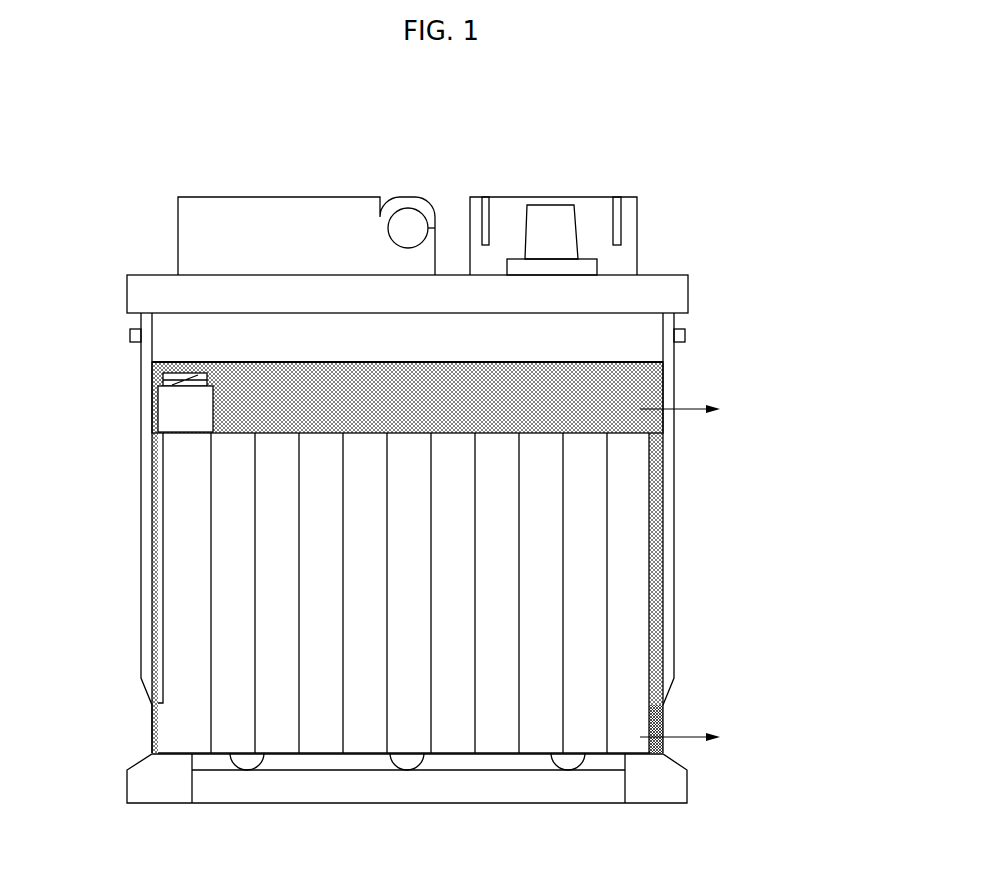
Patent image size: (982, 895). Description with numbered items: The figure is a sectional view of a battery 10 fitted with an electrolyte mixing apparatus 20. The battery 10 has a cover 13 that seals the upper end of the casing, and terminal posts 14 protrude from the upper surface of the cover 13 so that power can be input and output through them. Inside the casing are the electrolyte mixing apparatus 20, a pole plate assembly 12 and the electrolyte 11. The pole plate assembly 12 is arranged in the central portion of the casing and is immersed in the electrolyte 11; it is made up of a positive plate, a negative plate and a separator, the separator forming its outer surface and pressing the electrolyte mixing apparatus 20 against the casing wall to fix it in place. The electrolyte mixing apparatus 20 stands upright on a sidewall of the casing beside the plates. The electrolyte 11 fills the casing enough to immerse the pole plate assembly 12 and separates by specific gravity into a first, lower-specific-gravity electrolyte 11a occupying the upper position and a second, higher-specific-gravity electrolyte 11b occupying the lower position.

The battery 10 is at (645, 154).
The electrolyte 11 is at (645, 350).
The first electrolyte 11a is at (648, 385).
The second electrolyte 11b is at (657, 712).
The pole plate assembly 12 is at (517, 725).
The cover 13 is at (688, 291).
The terminal posts 14 is at (570, 233).
The electrolyte mixing apparatus 20 is at (177, 408).